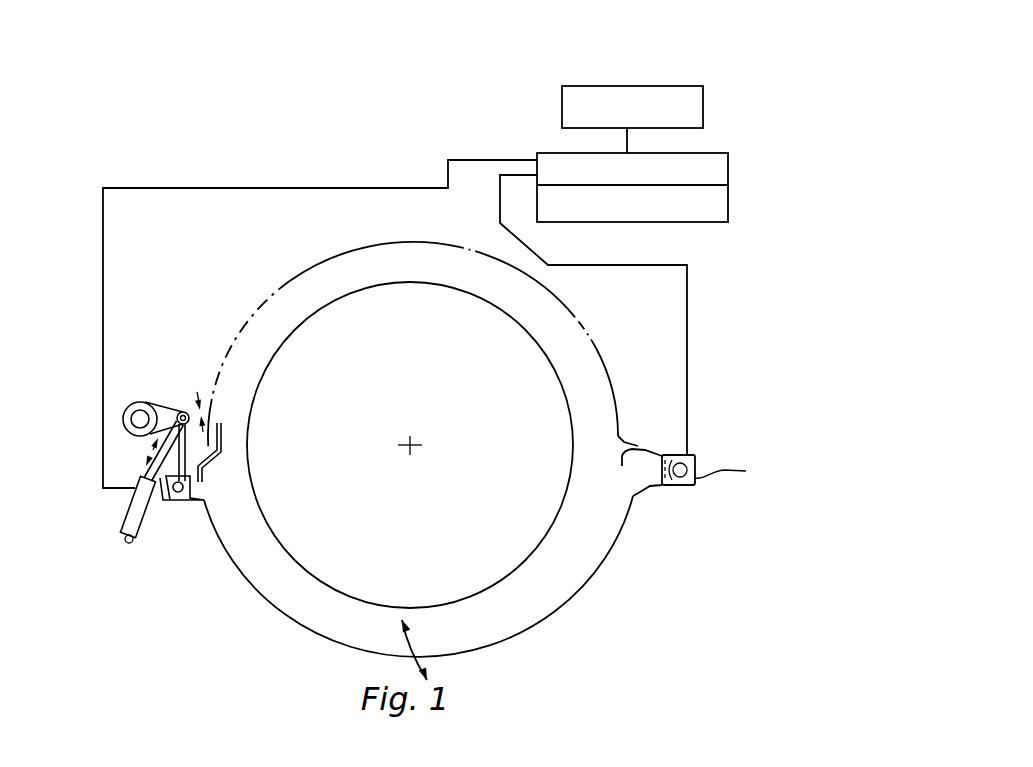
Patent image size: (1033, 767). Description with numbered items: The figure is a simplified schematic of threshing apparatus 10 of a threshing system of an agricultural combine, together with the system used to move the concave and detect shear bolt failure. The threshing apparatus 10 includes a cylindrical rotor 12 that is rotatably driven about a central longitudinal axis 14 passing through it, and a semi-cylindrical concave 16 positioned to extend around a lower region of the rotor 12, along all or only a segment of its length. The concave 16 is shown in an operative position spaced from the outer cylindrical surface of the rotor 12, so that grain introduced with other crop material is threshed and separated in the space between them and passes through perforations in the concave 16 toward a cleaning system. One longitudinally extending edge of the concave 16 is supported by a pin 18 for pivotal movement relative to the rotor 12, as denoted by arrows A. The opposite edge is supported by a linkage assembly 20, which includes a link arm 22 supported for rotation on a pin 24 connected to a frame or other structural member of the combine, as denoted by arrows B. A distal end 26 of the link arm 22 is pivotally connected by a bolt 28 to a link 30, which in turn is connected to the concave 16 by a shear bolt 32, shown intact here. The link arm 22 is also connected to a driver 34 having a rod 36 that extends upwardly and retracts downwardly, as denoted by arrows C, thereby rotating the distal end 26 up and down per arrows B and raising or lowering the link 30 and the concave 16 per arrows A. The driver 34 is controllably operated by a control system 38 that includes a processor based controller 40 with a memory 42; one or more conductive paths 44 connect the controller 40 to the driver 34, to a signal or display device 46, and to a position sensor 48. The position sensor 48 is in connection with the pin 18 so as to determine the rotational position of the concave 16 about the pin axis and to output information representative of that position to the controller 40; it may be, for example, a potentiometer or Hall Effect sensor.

The threshing apparatus 10 is at (122, 599).
The rotor 12 is at (341, 286).
The central longitudinal axis 14 is at (418, 447).
The concave 16 is at (570, 618).
The pin 18 is at (674, 488).
The linkage assembly 20 is at (146, 388).
The link arm 22 is at (120, 423).
The pin 24 is at (123, 402).
The distal end 26 is at (183, 410).
The bolt 28 is at (130, 452).
The link 30 is at (190, 452).
The shear bolt 32 is at (192, 480).
The driver 34 is at (120, 520).
The rod 36 is at (163, 478).
The control system 38 is at (422, 102).
The controller 40 is at (547, 152).
The memory 42 is at (690, 222).
The conductive paths 44 is at (268, 188).
The display device 46 is at (605, 86).
The position sensor 48 is at (738, 473).
The arrows A is at (403, 640).
The arrows B is at (210, 413).
The arrows C is at (128, 470).